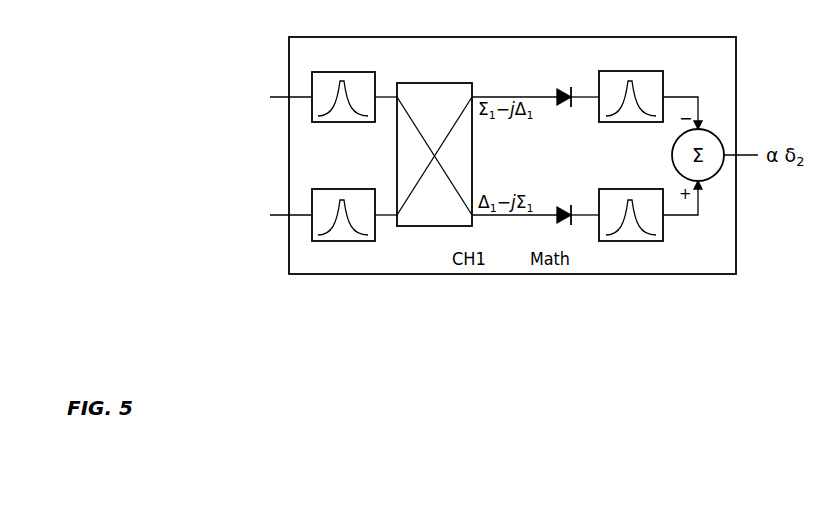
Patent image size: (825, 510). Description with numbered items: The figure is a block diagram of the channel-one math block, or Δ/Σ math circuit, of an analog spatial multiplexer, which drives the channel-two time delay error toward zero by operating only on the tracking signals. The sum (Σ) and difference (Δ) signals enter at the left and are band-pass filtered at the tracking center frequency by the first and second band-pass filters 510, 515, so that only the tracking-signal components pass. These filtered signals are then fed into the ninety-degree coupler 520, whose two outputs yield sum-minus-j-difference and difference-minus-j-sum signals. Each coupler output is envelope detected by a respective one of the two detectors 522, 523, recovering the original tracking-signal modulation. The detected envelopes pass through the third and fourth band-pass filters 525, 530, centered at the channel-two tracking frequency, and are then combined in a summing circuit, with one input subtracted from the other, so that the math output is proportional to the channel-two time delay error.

The first band-pass filter 510 is at (345, 124).
The second band-pass filter 515 is at (346, 188).
The 90° coupler 520 is at (417, 228).
The first detector 522 is at (566, 114).
The second detector 523 is at (566, 201).
The third band-pass filter 525 is at (612, 124).
The fourth band-pass filter 530 is at (632, 188).